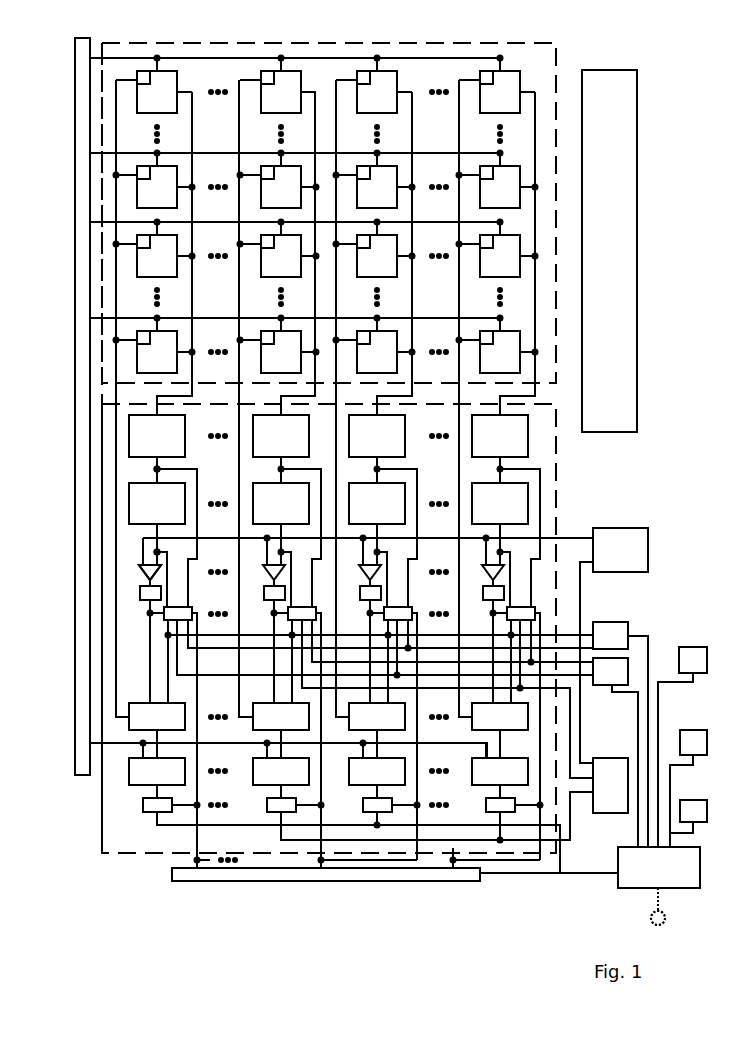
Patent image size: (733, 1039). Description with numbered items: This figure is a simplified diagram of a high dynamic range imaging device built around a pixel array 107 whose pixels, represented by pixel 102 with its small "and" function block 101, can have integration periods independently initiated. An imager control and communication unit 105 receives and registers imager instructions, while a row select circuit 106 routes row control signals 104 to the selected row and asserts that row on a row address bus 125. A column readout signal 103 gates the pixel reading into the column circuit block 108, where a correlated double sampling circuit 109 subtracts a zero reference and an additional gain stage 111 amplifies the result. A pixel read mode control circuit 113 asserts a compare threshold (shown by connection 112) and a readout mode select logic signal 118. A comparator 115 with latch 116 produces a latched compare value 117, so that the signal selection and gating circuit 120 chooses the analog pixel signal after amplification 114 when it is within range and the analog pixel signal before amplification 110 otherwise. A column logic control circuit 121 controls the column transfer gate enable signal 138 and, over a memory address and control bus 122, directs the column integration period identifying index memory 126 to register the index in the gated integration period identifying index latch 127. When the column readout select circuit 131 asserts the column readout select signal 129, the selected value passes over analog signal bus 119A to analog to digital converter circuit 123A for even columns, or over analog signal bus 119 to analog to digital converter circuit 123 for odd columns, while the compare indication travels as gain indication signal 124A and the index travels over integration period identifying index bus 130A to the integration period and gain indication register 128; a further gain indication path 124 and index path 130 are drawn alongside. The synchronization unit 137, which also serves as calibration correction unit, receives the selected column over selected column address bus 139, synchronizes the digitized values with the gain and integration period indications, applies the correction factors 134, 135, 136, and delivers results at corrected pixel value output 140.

The "and" function block 101 is at (140, 68).
The pixel 102 is at (173, 67).
The column readout signal 103 is at (188, 90).
The row control signals 104 is at (318, 52).
The imager control and communication unit 105 is at (592, 68).
The row select circuit 106 is at (75, 112).
The pixel array 107 is at (100, 130).
The column circuit block 108 is at (103, 406).
The correlated double sampling circuit 109 is at (127, 430).
The analog pixel signal before amplification 110 is at (152, 465).
The gain stage 111 is at (127, 500).
The control line 112 is at (572, 533).
The pixel read mode control circuit 113 is at (608, 527).
The analog pixel signal after amplification 114 is at (142, 540).
The comparator 115 is at (143, 555).
The latch 116 is at (140, 578).
The latched compare value 117 is at (143, 600).
The readout mode select logic signal 118 is at (581, 588).
The analog signal bus 119 is at (581, 705).
The analog signal bus 119A is at (584, 645).
The signal selection and gating circuit 120 is at (162, 622).
The column logic control circuit 121 is at (125, 700).
The memory address and control bus 122 is at (140, 740).
The analog to digital converter circuit 123 is at (605, 688).
The analog to digital converter circuit 123A is at (630, 623).
The signal line 124 is at (573, 740).
The gain indication signal 124A is at (177, 662).
The row address bus 125 is at (117, 747).
The column integration period identifying index memory 126 is at (128, 770).
The gated integration period identifying index latch 127 is at (142, 800).
The integration period and gain indication register 128 is at (606, 815).
The column readout select signal 129 is at (193, 838).
The output line 130 is at (490, 843).
The integration period identifying index bus 130A is at (559, 827).
The column readout select circuit 131 is at (172, 875).
The register 134 is at (692, 646).
The register 135 is at (692, 729).
The register 136 is at (692, 799).
The synchronization unit 137 is at (676, 892).
The column transfer gate enable signal 138 is at (118, 716).
The selected column address bus 139 is at (608, 877).
The corrected pixel value output 140 is at (666, 921).